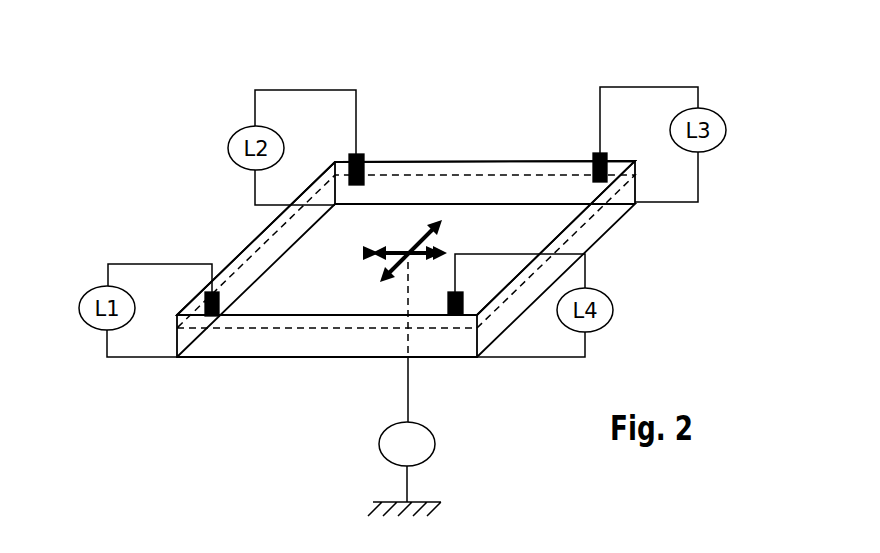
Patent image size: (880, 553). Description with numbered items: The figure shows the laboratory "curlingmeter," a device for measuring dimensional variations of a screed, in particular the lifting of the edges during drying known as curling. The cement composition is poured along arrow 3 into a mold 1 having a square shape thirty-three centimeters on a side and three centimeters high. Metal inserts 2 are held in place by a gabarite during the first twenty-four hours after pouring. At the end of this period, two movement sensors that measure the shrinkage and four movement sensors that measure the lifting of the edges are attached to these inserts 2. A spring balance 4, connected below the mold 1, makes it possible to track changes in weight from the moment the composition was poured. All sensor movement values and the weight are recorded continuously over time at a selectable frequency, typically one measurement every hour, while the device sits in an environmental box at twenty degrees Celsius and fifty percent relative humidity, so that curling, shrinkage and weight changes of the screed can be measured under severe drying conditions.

The mold 1 is at (288, 364).
The metal inserts 2 is at (378, 160).
The arrow 3 is at (497, 210).
The spring balance 4 is at (369, 426).